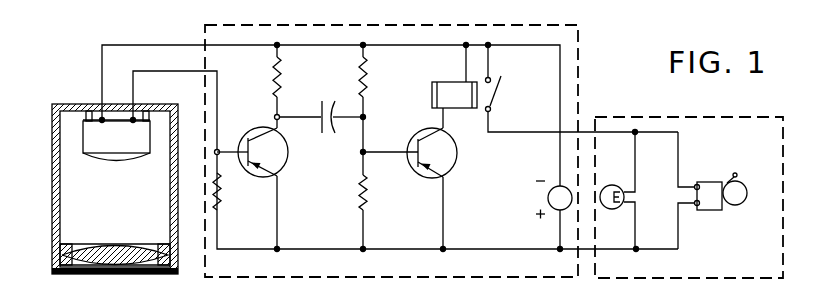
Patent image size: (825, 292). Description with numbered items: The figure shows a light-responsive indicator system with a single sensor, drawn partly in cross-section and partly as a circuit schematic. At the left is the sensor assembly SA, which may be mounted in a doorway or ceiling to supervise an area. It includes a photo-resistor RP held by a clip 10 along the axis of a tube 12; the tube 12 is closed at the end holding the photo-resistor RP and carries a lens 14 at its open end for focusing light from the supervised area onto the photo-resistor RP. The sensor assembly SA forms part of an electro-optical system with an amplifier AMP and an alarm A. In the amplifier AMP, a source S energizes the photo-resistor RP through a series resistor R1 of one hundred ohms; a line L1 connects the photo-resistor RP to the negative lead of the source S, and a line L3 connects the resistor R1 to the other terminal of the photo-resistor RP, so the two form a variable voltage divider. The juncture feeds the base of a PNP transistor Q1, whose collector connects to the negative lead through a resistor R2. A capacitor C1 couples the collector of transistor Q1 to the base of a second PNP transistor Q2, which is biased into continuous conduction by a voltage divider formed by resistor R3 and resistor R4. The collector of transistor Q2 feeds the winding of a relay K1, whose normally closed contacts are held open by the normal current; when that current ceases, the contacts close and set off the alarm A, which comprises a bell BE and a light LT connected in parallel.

The sensor assembly SA is at (41, 91).
The clip 10 is at (153, 119).
The tube 12 is at (52, 203).
The lens 14 is at (113, 244).
The photo-resistor RP is at (96, 152).
The amplifier AMP is at (578, 35).
The line L1 is at (216, 48).
The line L3 is at (219, 98).
The resistor R1 is at (222, 197).
The resistor R2 is at (282, 64).
The resistor R3 is at (369, 64).
The resistor R4 is at (369, 197).
The capacitor C1 is at (322, 133).
The transistor Q1 is at (287, 162).
The transistor Q2 is at (458, 152).
The relay K1 is at (430, 98).
The source S is at (554, 216).
The alarm A is at (628, 117).
The light LT is at (607, 208).
The bell BE is at (735, 206).